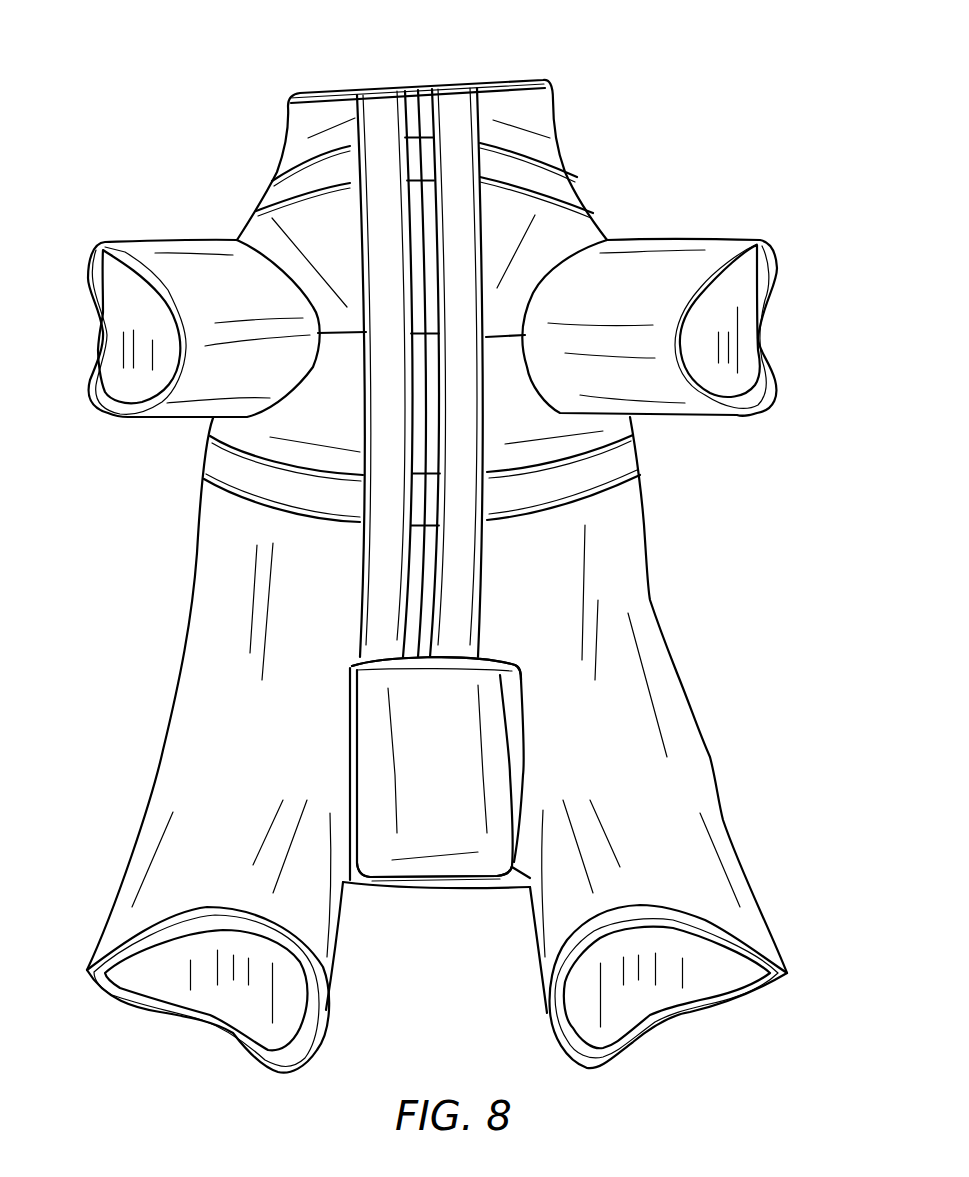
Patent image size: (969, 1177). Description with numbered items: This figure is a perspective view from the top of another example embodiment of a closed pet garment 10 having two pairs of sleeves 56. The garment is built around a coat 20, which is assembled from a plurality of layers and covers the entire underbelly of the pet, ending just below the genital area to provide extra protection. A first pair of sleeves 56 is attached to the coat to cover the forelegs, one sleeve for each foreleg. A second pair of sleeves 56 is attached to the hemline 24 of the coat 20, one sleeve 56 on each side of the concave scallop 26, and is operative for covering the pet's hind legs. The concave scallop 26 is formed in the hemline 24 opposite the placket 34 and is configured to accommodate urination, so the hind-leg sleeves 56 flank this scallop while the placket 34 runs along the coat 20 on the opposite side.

The pet garment 10 is at (618, 86).
The coat 20 is at (620, 560).
The hemline 24 is at (350, 667).
The concave scallop 26 is at (485, 660).
The placket 34 is at (428, 881).
The sleeves 56 is at (195, 262).